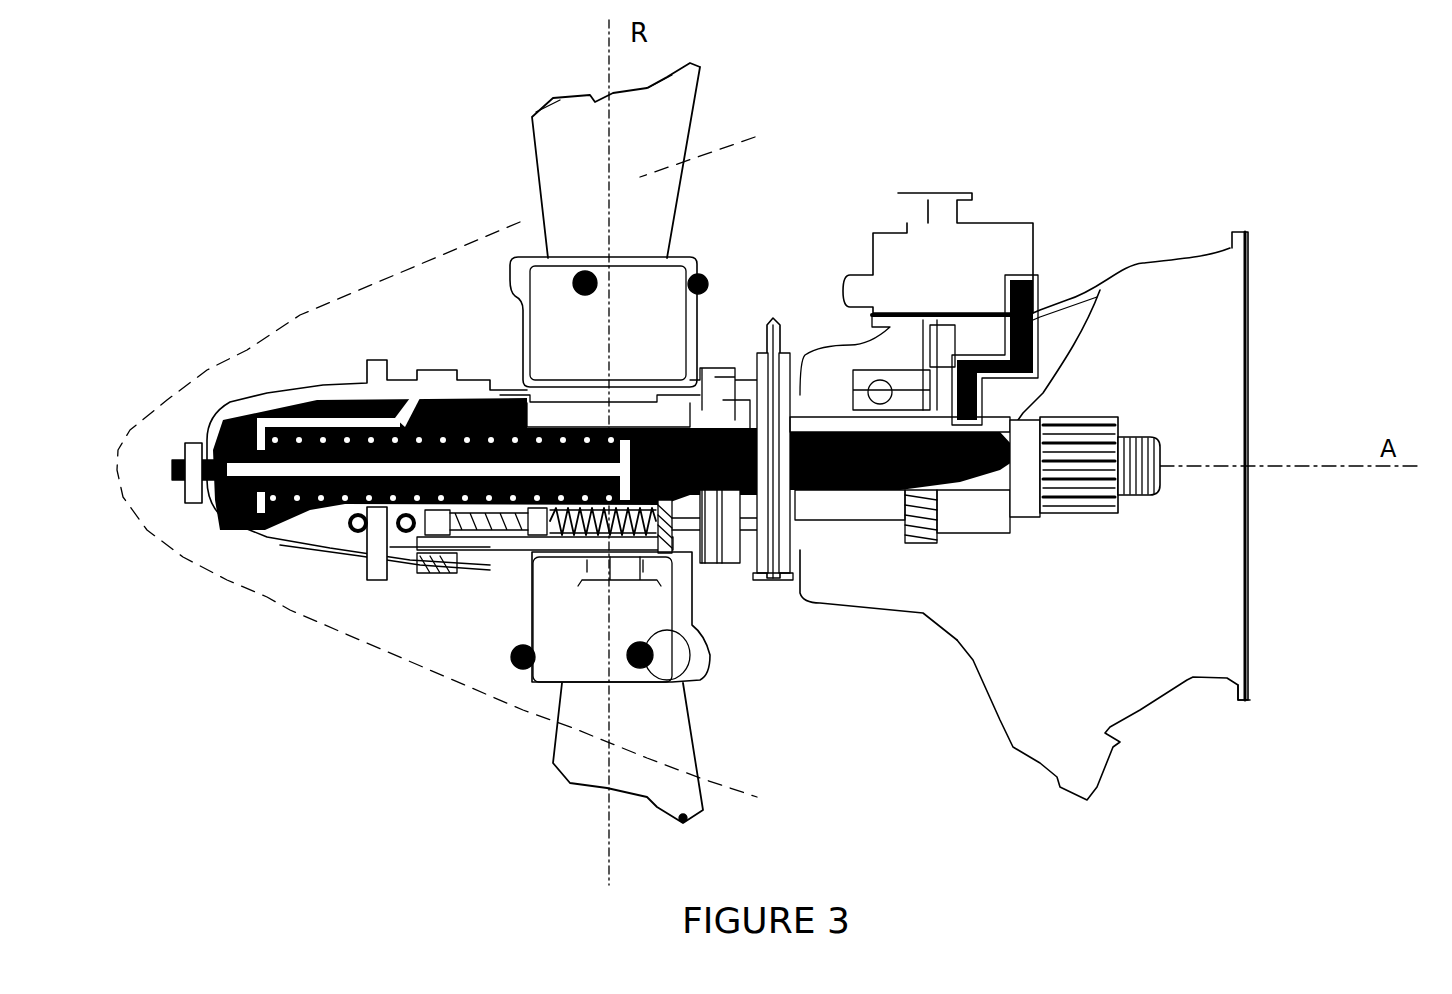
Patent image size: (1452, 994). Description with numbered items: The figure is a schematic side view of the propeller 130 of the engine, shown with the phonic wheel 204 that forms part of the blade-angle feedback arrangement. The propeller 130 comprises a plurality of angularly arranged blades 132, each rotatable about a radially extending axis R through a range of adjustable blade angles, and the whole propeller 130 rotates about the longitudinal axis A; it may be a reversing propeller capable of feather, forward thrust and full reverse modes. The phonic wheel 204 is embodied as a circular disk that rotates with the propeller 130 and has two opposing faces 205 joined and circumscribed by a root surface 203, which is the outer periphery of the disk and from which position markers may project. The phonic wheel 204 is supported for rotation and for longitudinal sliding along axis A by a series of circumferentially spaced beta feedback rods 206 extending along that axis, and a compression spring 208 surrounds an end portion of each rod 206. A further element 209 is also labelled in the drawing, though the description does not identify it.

The propeller 130 is at (298, 222).
The blades 132 is at (532, 112).
The root surface 203 is at (772, 410).
The phonic wheel 204 is at (773, 313).
The opposing faces 205 is at (785, 530).
The beta feedback rods 206 is at (693, 537).
The compression spring 208 is at (543, 540).
The retaining pin 209 is at (442, 553).